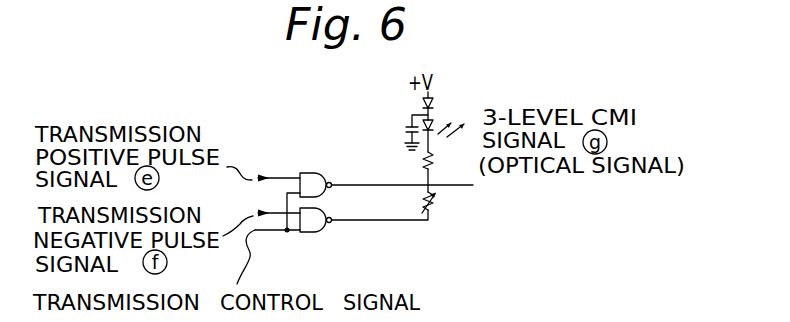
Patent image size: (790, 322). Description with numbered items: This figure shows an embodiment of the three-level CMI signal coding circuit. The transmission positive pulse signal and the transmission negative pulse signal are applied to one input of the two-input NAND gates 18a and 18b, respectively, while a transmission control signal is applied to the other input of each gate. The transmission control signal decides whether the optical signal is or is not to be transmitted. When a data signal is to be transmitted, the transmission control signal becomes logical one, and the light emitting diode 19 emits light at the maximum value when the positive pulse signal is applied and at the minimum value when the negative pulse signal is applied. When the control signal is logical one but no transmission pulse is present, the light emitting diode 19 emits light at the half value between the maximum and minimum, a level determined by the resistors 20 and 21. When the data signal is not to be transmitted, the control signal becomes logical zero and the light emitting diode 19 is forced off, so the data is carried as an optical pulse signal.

The 2-input NAND gate 18a is at (318, 172).
The 2-input NAND gate 18b is at (316, 233).
The light emitting diode 19 is at (437, 122).
The resistor 20 is at (433, 162).
The resistor 21 is at (436, 208).